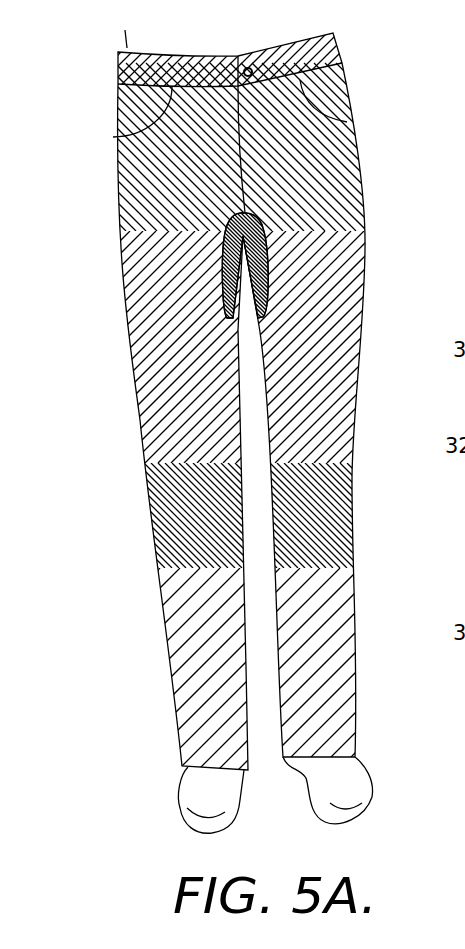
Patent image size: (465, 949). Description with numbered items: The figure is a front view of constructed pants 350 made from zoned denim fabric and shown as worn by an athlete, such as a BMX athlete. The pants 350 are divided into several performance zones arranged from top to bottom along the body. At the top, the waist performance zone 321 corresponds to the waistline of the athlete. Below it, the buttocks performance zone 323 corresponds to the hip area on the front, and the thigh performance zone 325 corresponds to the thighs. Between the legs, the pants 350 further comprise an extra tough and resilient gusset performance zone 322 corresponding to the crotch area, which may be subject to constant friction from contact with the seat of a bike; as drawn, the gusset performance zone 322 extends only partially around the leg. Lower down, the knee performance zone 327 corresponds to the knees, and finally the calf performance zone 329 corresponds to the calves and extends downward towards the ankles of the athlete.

The pants 350 is at (410, 99).
The waist performance zone 321 is at (115, 50).
The gusset performance zone 322 is at (261, 266).
The buttocks performance zone 323 is at (114, 90).
The thigh performance zone 325 is at (103, 237).
The knee performance zone 327 is at (133, 462).
The calf performance zone 329 is at (145, 577).